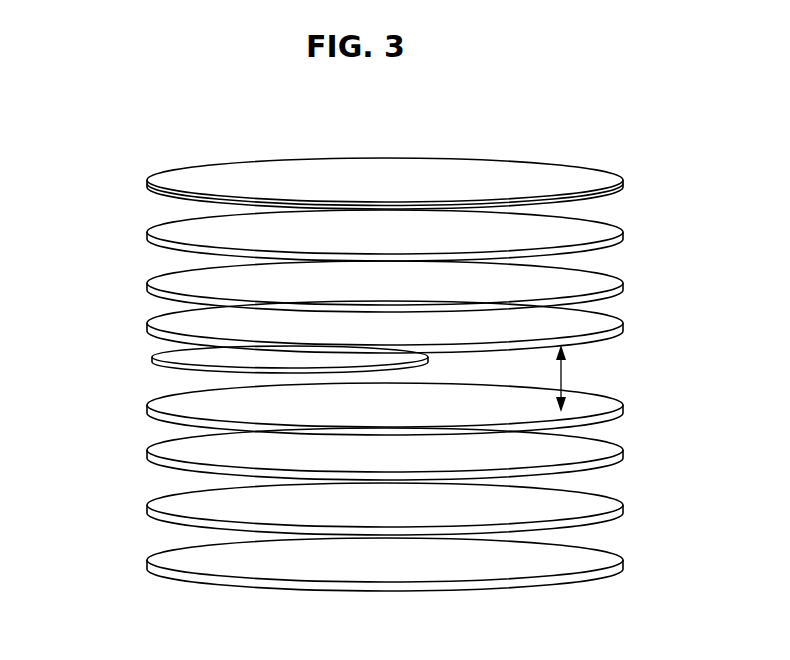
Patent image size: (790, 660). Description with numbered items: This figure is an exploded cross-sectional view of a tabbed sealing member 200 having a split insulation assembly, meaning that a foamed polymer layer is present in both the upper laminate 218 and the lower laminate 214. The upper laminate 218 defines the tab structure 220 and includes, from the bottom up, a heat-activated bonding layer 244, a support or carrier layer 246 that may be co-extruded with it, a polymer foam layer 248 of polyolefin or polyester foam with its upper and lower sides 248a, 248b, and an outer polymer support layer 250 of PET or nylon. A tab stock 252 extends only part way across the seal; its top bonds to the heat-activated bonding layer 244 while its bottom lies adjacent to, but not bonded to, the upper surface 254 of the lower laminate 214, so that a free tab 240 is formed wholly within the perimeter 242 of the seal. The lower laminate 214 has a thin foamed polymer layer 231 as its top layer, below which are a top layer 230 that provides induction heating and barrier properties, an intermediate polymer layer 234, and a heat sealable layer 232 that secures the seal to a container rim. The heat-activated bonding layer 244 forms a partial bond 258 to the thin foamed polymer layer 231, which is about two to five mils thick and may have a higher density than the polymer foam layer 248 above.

The tabbed sealing member 200 is at (526, 128).
The lower laminate 214 is at (115, 415).
The upper laminate 218 is at (107, 183).
The tab structure 220 is at (237, 184).
The top layer 230 is at (622, 452).
The thin foamed polymer layer 231 is at (625, 404).
The heat sealable layer 232 is at (588, 582).
The intermediate polymer layer 234 is at (625, 506).
The free tab 240 is at (343, 158).
The perimeter 242 is at (625, 458).
The heat-activated bonding layer 244 is at (625, 324).
The support or carrier layer 246 is at (622, 282).
The polymer foam layer 248 is at (620, 231).
The top surface of electrode disc 248a is at (600, 230).
The bottom surface of electrode disc 248b is at (607, 250).
The outer polymer support layer 250 is at (566, 182).
The tab stock 252 is at (167, 360).
The upper surface of the lower laminate 254 is at (189, 399).
The partial bond 258 is at (566, 375).